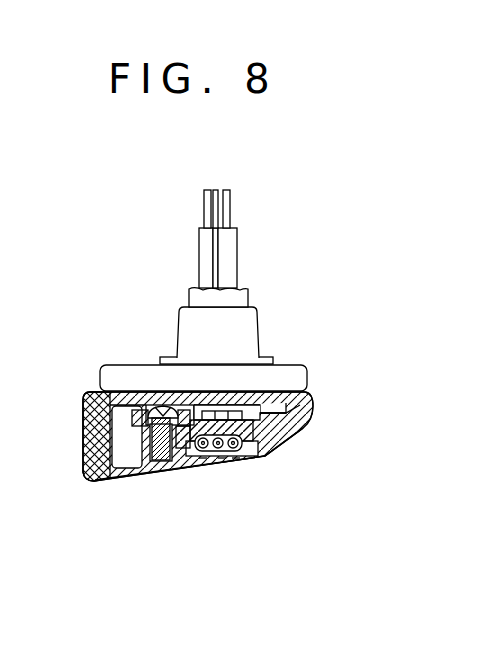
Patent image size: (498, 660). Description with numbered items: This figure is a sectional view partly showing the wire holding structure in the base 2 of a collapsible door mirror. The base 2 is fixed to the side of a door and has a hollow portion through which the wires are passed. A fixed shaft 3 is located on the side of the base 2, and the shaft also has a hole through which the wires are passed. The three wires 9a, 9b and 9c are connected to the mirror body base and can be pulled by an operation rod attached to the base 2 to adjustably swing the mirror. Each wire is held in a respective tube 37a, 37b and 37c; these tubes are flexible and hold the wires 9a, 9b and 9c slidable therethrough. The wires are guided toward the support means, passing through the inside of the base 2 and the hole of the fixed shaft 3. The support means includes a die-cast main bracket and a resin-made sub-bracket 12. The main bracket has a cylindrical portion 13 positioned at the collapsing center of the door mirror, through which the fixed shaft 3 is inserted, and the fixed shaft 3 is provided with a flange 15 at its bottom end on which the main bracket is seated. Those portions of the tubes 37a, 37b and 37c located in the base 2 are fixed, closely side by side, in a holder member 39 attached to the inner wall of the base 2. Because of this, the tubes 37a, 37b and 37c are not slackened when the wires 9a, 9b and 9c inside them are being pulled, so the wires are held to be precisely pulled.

The base 2 is at (93, 470).
The fixed shaft 3 is at (238, 296).
The wire 9a is at (205, 213).
The wire 9b is at (230, 193).
The wire 9c is at (232, 213).
The sub-bracket 12 is at (273, 380).
The cylindrical portion 13 is at (243, 336).
The flange 15 is at (277, 403).
The tube 37a is at (203, 247).
The tube 37b is at (216, 268).
The tube 37c is at (228, 262).
The holder member 39 is at (253, 430).